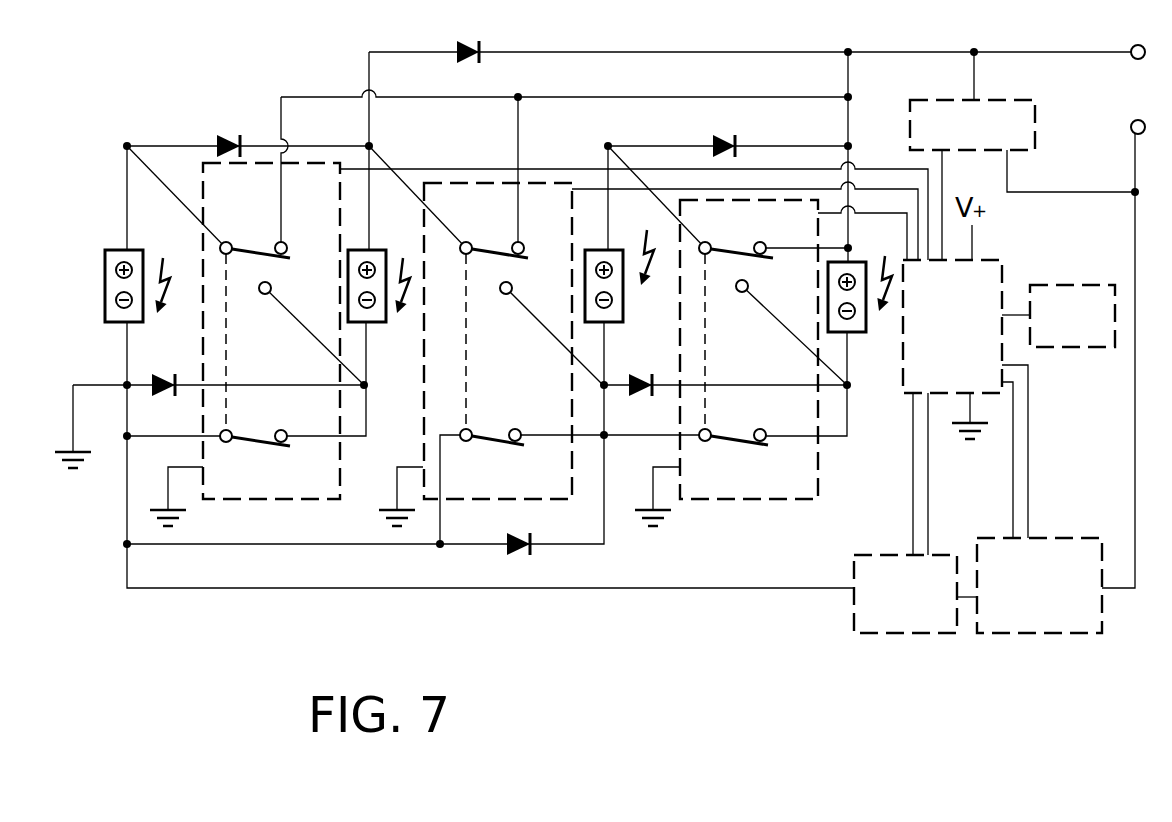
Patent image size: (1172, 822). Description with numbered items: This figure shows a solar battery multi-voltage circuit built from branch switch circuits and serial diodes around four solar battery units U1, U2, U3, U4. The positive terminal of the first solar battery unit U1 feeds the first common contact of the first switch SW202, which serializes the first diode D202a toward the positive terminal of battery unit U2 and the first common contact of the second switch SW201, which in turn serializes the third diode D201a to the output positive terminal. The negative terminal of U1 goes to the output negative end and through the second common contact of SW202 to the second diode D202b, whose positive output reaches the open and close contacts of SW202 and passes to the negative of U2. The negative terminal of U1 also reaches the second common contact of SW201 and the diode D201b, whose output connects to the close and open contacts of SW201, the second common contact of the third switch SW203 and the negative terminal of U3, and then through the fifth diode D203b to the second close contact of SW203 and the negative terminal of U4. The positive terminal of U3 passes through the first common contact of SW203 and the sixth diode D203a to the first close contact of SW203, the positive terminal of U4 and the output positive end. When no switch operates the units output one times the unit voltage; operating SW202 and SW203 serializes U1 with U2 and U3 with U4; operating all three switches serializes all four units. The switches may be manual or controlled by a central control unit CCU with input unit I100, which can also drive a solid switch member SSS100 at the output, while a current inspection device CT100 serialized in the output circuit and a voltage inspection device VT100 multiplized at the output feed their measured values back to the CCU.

The first solar battery unit U1 is at (118, 286).
The second solar battery unit U2 is at (379, 303).
The third solar battery unit U3 is at (624, 276).
The fourth solar battery unit U4 is at (860, 311).
The third diode D201a is at (463, 38).
The diode D201b is at (523, 531).
The first diode D202a is at (232, 133).
The second diode D202b is at (163, 370).
The sixth diode D203a is at (729, 133).
The fifth diode D203b is at (642, 371).
The second switch SW201 is at (572, 488).
The first switch SW202 is at (340, 472).
The third switch SW203 is at (717, 500).
The inspection device VT100 is at (972, 125).
The central control unit CCU is at (952, 326).
The input unit I100 is at (1072, 316).
The inspection device CT100 is at (905, 594).
The solid switch member SSS100 is at (1039, 585).